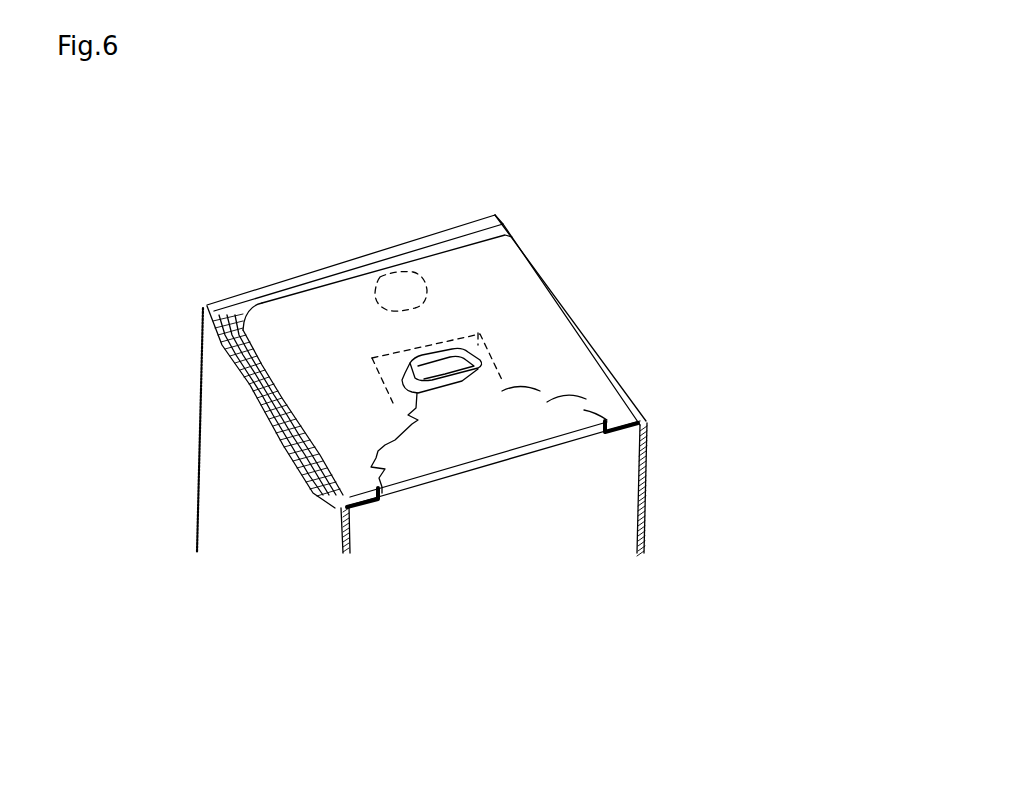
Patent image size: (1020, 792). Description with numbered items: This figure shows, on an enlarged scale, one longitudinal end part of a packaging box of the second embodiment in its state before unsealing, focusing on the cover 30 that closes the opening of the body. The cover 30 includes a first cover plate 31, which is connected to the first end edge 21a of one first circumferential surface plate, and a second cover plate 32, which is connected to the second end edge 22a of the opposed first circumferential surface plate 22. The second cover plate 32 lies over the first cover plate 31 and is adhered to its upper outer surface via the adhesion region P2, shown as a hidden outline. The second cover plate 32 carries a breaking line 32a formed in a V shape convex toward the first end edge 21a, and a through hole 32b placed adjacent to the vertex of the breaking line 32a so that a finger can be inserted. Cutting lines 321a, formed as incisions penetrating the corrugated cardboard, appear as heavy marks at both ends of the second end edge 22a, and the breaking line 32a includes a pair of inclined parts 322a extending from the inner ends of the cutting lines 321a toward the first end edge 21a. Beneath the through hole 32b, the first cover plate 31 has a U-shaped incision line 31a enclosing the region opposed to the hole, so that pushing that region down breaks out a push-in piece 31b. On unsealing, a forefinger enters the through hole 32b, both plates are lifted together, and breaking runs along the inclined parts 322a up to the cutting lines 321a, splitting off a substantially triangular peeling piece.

The cover 30 is at (633, 165).
The first end edge 21a is at (333, 263).
The first cover plate 31 is at (232, 303).
The incision line 31a is at (440, 335).
The push-in piece 31b is at (372, 380).
The second cover plate 32 is at (525, 280).
The breaking line 32a is at (592, 402).
The through hole 32b is at (435, 385).
The cutting lines 321a is at (632, 427).
The inclined parts 322a is at (405, 420).
The first circumferential surface plate 22 is at (622, 515).
The second end edge 22a is at (417, 493).
The adhesion region P2 is at (390, 278).